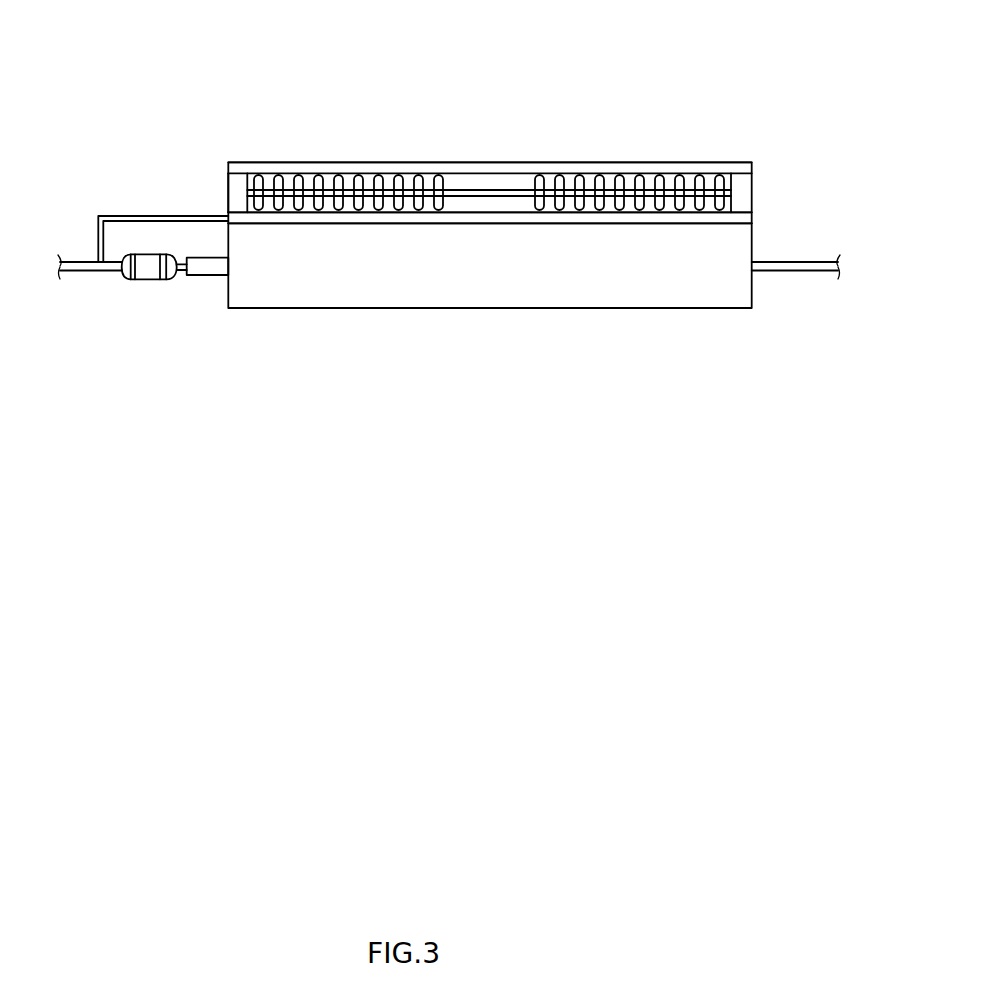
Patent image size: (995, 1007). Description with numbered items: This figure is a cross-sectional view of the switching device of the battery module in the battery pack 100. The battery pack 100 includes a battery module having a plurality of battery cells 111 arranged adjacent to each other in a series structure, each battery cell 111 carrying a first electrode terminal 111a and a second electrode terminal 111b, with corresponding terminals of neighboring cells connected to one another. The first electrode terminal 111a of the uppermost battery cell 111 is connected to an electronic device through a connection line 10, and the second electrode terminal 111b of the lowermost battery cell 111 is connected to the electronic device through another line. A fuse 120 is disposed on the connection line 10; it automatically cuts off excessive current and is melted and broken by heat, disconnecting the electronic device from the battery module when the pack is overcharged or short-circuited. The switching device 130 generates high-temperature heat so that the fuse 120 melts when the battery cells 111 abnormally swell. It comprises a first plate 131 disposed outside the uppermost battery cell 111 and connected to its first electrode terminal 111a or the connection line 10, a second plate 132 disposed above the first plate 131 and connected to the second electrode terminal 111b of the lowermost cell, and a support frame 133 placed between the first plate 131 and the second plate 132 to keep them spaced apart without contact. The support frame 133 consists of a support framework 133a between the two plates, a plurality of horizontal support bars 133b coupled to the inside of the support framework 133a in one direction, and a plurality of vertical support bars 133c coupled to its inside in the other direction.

The battery pack 100 is at (691, 90).
The connection line 10 is at (76, 274).
The fuse 120 is at (147, 280).
The battery cell 111 is at (489, 308).
The first electrode terminal 111a is at (206, 276).
The second electrode terminal 111b is at (797, 272).
The switching device 130 is at (498, 93).
The first plate 131 is at (488, 217).
The second plate 132 is at (419, 167).
The support frame 133 is at (359, 112).
The support framework 133a is at (237, 182).
The horizontal support bars 133b is at (298, 192).
The vertical support bars 133c is at (359, 178).